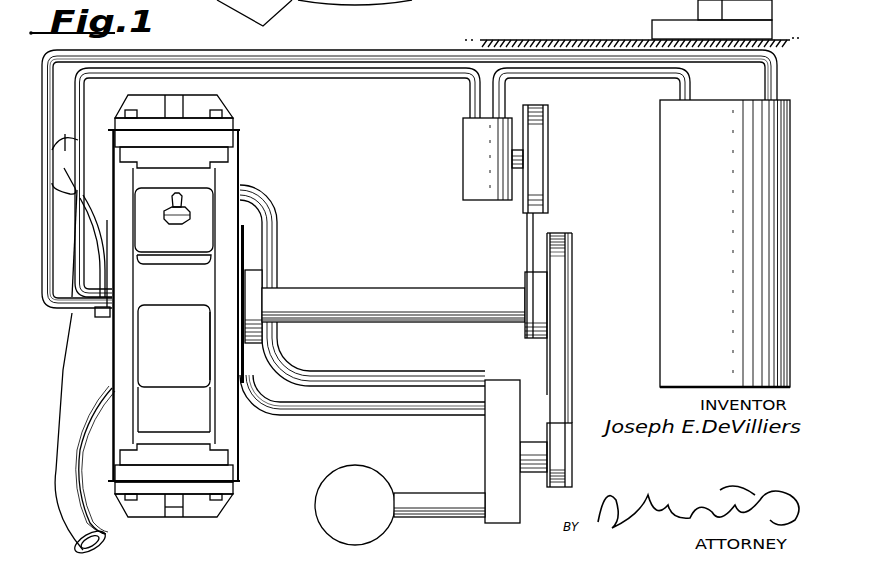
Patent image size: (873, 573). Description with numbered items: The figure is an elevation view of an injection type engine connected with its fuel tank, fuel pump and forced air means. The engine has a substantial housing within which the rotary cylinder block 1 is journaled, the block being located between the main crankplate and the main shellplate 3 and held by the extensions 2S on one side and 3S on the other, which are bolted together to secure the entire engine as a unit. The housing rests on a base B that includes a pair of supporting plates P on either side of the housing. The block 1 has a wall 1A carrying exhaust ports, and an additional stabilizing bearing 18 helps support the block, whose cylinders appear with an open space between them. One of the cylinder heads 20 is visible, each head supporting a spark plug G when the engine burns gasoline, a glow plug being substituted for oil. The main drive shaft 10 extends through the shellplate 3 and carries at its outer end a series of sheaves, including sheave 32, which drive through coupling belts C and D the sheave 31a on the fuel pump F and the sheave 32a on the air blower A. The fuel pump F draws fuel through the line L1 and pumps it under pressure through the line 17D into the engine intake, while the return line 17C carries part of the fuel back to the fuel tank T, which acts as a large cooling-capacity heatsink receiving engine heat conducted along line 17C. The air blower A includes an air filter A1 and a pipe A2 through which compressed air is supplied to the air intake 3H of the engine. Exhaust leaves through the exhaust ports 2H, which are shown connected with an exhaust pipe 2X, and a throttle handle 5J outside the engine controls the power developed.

The rotary cylinder block 1 is at (196, 284).
The wall 1A is at (140, 366).
The stabilizing bearing 18 is at (208, 327).
The extension 2S is at (112, 147).
The exhaust ports 2H is at (100, 203).
The exhaust pipe 2X is at (108, 528).
The main shellplate 3 is at (230, 245).
The extension 3S is at (236, 162).
The air intake 3H is at (250, 190).
The throttle handle 5J is at (65, 135).
The spark plug G is at (177, 196).
The supporting plates P is at (223, 123).
The cylinder head 20 is at (203, 213).
The main drive shaft 10 is at (389, 295).
The return line 17C is at (360, 52).
The fuel line 17D is at (357, 78).
The line L1 is at (688, 90).
The base B is at (570, 31).
The fuel pump F is at (470, 143).
The coupling belt C is at (538, 168).
The sheave 31a is at (596, 128).
The fuel tank T is at (670, 222).
The sheave 32 is at (572, 300).
The sheave 32a is at (609, 464).
The coupling belt D is at (560, 413).
The air blower A is at (520, 516).
The air filter A1 is at (384, 487).
The pipe A2 is at (297, 382).